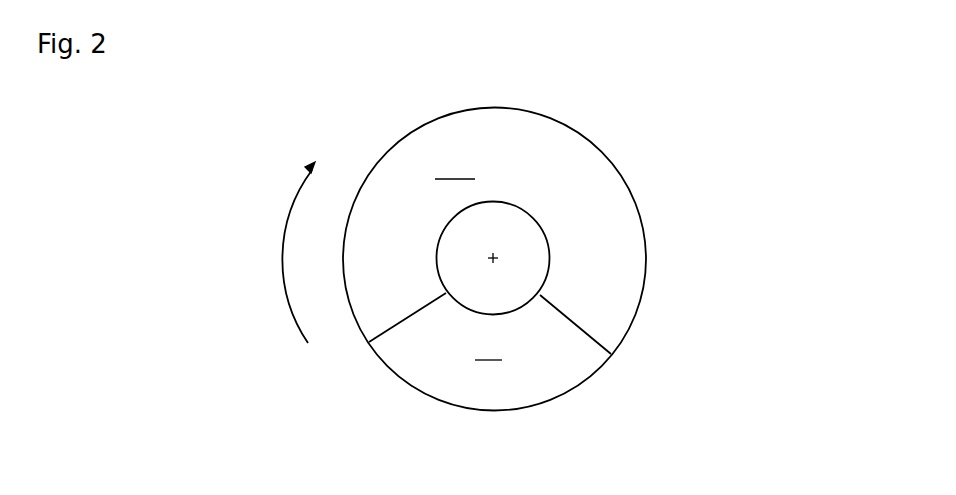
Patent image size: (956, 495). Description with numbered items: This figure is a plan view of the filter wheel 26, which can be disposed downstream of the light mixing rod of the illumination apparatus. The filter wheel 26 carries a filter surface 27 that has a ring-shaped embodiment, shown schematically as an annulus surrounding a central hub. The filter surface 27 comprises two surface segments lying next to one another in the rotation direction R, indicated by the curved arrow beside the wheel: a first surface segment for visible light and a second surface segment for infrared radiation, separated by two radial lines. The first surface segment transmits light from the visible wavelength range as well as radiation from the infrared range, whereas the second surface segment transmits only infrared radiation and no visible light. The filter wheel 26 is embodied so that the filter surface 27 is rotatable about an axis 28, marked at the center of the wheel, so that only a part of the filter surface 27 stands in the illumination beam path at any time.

The filter wheel 26 is at (605, 150).
The filter surface 27 is at (542, 133).
The axis 28 is at (493, 258).
The rotation direction R is at (282, 247).